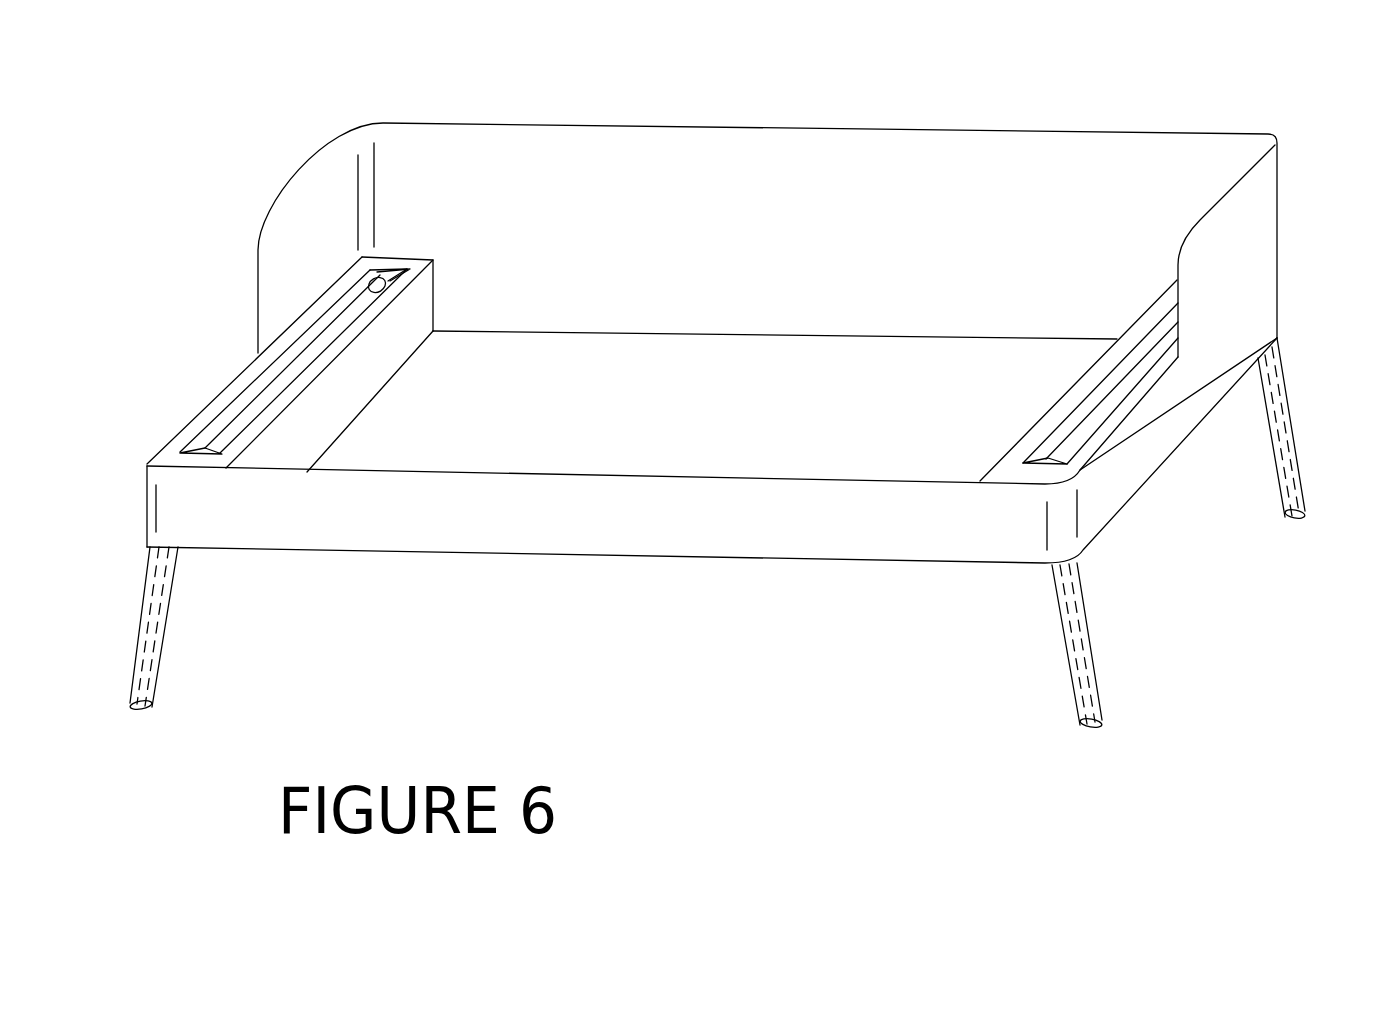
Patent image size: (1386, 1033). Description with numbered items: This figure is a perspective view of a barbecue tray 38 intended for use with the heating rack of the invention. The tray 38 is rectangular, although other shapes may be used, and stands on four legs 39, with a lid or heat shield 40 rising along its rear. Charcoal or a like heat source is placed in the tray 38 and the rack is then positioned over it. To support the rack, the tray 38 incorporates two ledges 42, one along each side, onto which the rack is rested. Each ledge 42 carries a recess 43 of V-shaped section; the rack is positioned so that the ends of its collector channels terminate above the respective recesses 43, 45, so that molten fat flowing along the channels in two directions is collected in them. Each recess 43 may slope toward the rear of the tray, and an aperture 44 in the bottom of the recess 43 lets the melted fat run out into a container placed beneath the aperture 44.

The barbecue tray 38 is at (672, 512).
The legs 39 is at (173, 593).
The lid or heat shield 40 is at (845, 172).
The ledges 42 is at (247, 380).
The recess 43 is at (310, 363).
The aperture 44 is at (377, 283).
The right rail groove 45 is at (1093, 402).